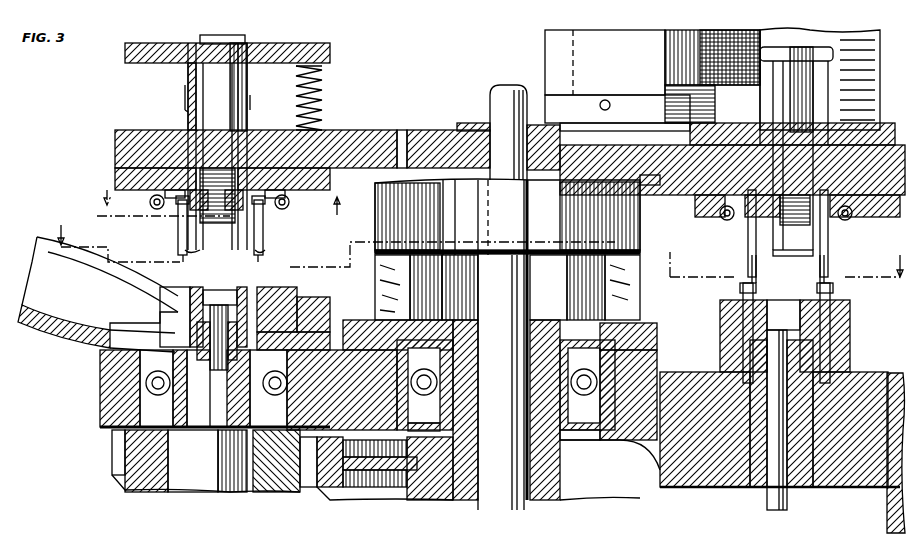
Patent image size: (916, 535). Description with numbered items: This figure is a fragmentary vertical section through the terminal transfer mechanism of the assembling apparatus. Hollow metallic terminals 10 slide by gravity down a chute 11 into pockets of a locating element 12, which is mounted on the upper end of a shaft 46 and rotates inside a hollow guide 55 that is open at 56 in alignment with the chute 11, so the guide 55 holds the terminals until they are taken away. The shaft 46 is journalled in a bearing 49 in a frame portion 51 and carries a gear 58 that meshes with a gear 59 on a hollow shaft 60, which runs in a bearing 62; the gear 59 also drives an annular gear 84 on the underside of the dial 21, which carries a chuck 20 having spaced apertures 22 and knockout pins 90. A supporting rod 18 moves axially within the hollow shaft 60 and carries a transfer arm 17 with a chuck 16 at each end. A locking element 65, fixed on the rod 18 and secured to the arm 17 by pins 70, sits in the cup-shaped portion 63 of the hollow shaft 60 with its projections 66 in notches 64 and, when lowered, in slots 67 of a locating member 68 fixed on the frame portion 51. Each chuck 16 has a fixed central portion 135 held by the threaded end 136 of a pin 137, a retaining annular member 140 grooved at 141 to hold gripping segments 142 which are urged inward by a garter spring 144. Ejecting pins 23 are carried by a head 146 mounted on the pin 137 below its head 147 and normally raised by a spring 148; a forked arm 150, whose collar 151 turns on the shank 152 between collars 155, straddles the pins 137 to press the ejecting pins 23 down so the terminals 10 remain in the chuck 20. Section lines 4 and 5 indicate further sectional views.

The section line 4- 4 is at (479, 243).
The section line 5- 5 is at (218, 195).
The hollow metallic terminals 10 is at (258, 266).
The chute 11 is at (78, 342).
The locating element 12 is at (246, 279).
The chuck 16 is at (176, 218).
The transfer arm 17 is at (367, 130).
The supporting rod 18 is at (498, 120).
The chuck 20 is at (855, 330).
The dial 21 is at (886, 375).
The spaced apertures 22 is at (722, 352).
The ejecting pins 23 is at (185, 88).
The shaft 46 is at (200, 478).
The bearing 49 is at (146, 378).
The frame portion 51 is at (100, 392).
The hollow guide 55 is at (292, 297).
The opening 56 is at (190, 290).
The gear 58 is at (118, 448).
The gear 59 is at (440, 460).
The hollow shaft 60 is at (466, 425).
The bearing 62 is at (442, 410).
The cup-shaped portion 63 is at (466, 294).
The notches 64 is at (412, 296).
The locking element 65 is at (450, 130).
The projections 66 is at (378, 231).
The slots 67 is at (378, 278).
The locating member 68 is at (640, 323).
The pins 70 is at (406, 118).
The annular gear 84 is at (733, 488).
The knockout pins 90 is at (789, 500).
The central portion 135 is at (792, 225).
The threaded end 136 is at (258, 252).
The pin 137 is at (234, 50).
The retaining annular member 140 is at (118, 175).
The groove 141 is at (285, 205).
The segments 142 is at (282, 212).
The garter spring 144 is at (155, 210).
The head 146 is at (322, 43).
The pin head 147 is at (218, 36).
The spring 148 is at (322, 100).
The forked arm 150 is at (862, 63).
The collar 151 is at (548, 60).
The shank 152 is at (632, 128).
The collars 155 is at (660, 100).